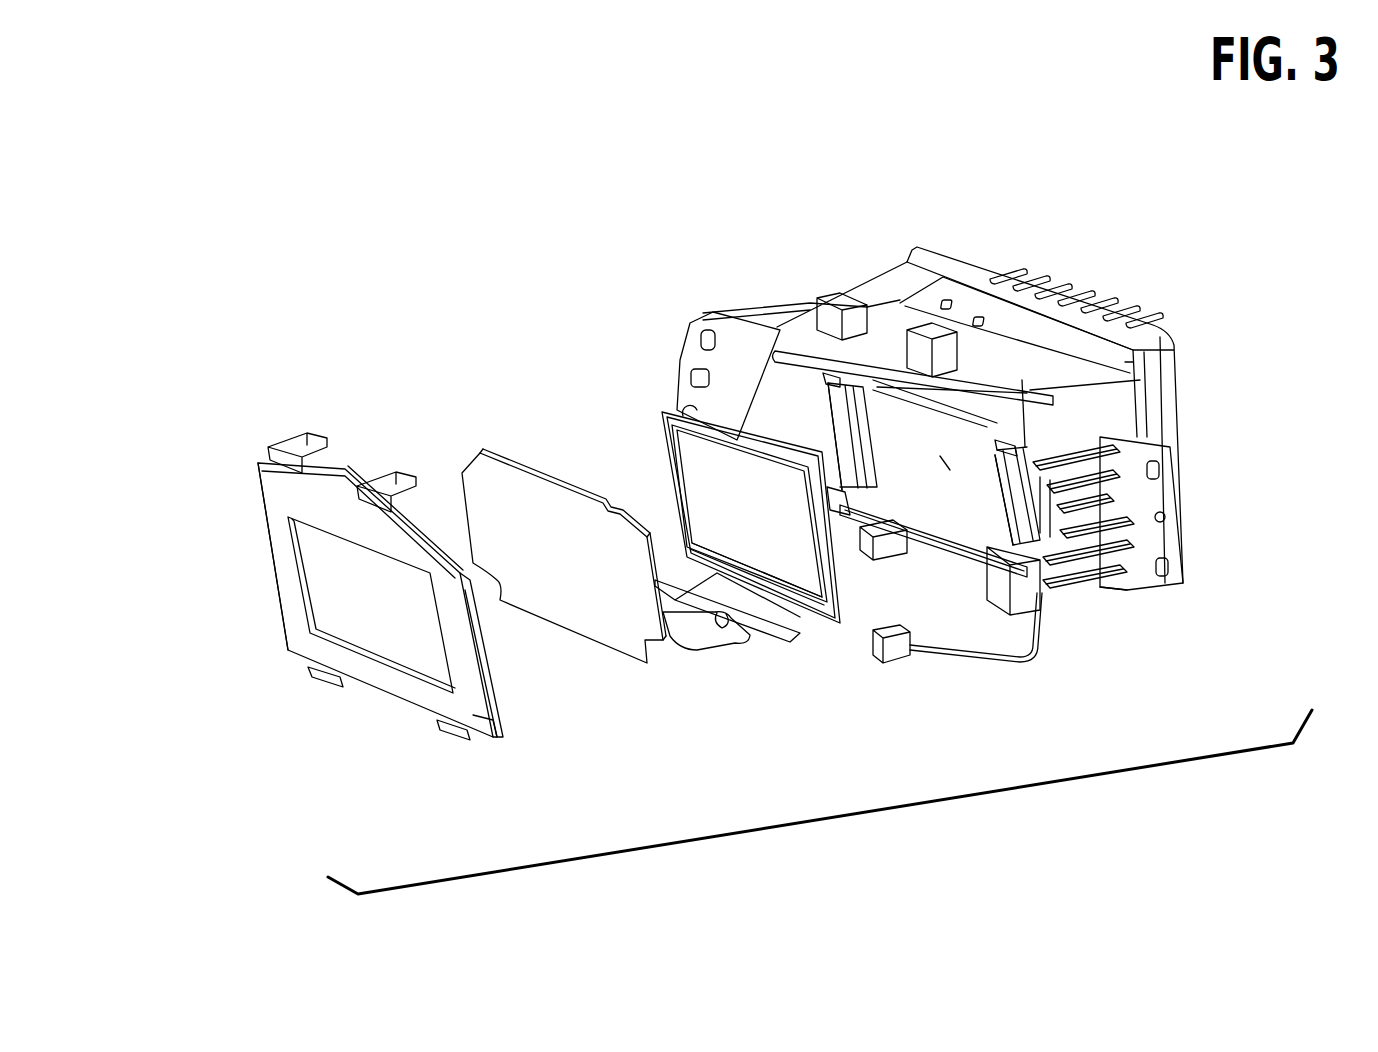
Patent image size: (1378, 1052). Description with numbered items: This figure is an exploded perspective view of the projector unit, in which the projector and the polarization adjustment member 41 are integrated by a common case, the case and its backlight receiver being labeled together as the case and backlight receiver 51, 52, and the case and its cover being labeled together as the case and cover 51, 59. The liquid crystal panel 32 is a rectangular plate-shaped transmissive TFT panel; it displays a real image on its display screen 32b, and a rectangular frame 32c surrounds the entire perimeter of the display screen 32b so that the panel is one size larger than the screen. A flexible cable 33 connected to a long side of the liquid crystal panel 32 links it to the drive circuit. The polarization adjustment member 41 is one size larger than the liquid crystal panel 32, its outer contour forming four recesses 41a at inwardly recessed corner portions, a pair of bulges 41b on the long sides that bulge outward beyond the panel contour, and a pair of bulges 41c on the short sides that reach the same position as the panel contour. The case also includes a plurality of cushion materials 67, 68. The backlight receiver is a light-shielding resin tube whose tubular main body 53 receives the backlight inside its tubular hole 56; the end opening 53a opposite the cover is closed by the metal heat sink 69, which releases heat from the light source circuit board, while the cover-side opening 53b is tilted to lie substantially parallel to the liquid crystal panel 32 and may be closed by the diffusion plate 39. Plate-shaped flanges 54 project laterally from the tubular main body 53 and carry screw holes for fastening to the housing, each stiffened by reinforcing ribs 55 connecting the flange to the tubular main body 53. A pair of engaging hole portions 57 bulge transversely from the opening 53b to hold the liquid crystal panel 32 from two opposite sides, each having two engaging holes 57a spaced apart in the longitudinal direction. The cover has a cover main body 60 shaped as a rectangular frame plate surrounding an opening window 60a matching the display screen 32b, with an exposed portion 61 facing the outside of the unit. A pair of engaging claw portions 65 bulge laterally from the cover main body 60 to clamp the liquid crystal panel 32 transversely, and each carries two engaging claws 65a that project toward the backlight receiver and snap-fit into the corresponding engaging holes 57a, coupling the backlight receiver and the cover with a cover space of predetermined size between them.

The liquid crystal panel 32 is at (670, 413).
The display screen 32b is at (690, 465).
The rectangular frame 32c is at (840, 573).
The flexible cable 33 is at (770, 630).
The diffusion plate 39 is at (943, 510).
The polarization adjustment member 41 is at (520, 468).
The recess 41a is at (478, 460).
The bulge 41b is at (462, 510).
The bulge 41c is at (565, 480).
The fixing portion 51, 52 is at (1124, 596).
The fixing portion 51, 59 is at (255, 466).
The tubular main body 53 is at (1128, 408).
The opening 53a is at (1125, 366).
The opening 53b is at (1000, 590).
The flange 54 is at (707, 322).
The reinforcing rib 55 is at (1165, 520).
The tubular hole 56 is at (950, 460).
The engaging hole portion 57 is at (935, 460).
The engaging hole 57a is at (945, 190).
The cover main body 60 is at (271, 545).
The opening window 60a is at (310, 593).
The exposed portion 61 is at (477, 716).
The engaging claw portion 65 is at (369, 580).
The engaging claw 65a is at (390, 380).
The cushion material 67 is at (843, 387).
The cushion material 68 is at (832, 383).
The heat sink 69 is at (1157, 317).